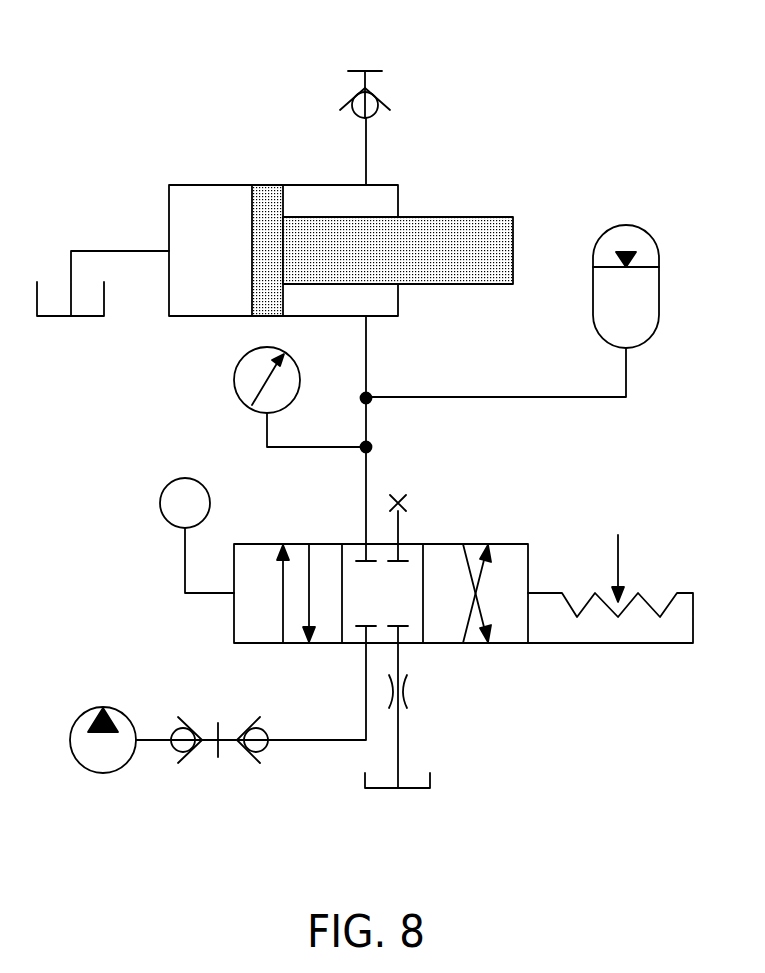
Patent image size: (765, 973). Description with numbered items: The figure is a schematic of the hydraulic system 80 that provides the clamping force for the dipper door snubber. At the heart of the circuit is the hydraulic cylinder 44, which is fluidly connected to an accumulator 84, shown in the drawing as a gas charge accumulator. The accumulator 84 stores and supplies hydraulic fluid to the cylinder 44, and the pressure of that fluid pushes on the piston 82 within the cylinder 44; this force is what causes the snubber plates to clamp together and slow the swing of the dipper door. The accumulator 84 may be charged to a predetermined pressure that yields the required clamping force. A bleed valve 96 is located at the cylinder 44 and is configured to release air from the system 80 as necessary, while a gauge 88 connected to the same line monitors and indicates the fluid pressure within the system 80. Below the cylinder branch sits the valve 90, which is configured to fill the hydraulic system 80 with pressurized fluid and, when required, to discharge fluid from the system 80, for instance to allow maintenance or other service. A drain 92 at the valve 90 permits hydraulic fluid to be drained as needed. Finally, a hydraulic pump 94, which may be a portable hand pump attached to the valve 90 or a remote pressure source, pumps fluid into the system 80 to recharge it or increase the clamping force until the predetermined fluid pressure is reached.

The hydraulic system 80 is at (556, 116).
The hydraulic cylinder 44 is at (148, 185).
The piston 82 is at (265, 191).
The bleed valve 96 is at (378, 63).
The accumulator 84 is at (622, 223).
The gauge 88 is at (231, 375).
The valve 90 is at (643, 655).
The drain 92 is at (415, 693).
The hydraulic pump 94 is at (106, 774).